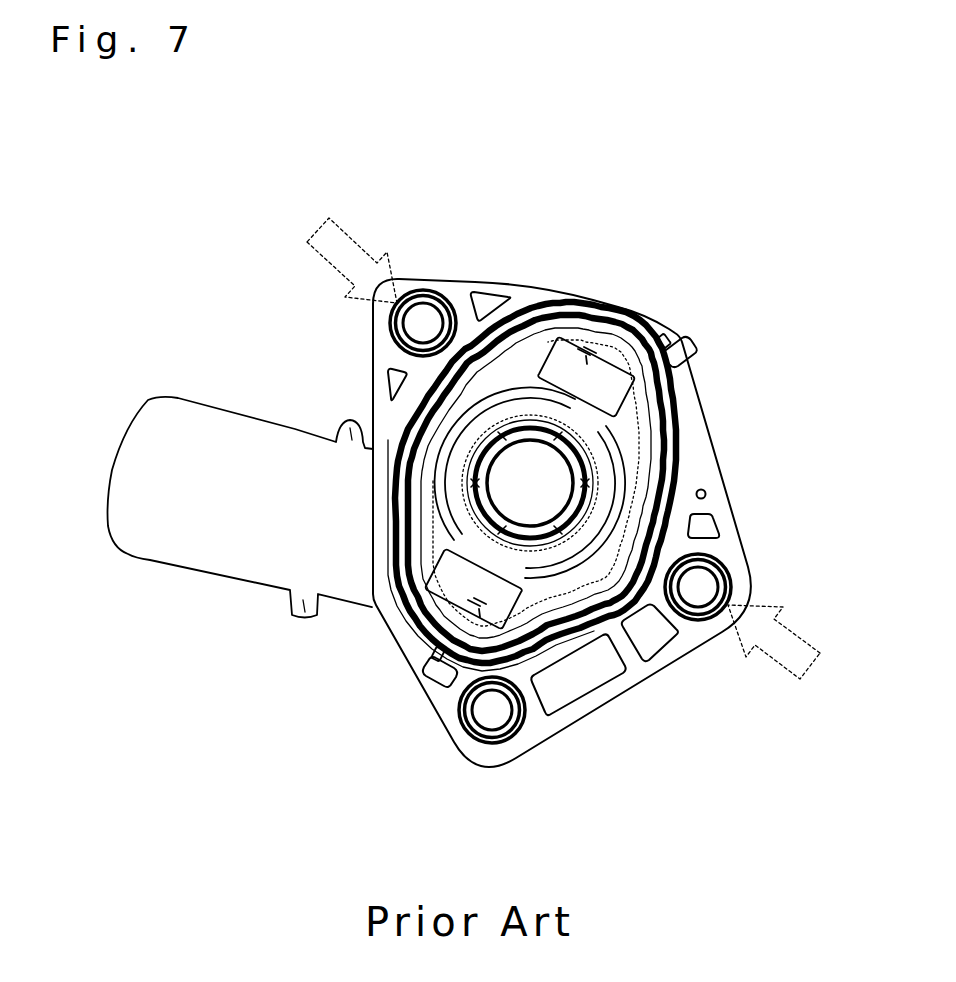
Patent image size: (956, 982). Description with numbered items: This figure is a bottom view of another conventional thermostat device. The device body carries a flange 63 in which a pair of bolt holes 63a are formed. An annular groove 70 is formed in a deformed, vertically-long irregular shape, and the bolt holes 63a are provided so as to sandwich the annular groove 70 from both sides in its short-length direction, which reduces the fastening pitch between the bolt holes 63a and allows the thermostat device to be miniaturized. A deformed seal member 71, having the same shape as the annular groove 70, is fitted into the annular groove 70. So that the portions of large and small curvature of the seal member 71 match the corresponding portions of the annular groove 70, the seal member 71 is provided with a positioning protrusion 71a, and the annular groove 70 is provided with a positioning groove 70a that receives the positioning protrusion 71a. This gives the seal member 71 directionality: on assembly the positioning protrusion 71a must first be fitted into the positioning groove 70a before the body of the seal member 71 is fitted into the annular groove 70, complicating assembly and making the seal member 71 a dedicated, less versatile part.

The flange 63 is at (443, 281).
The bolt hole 63a is at (417, 291).
The annular groove 70 is at (678, 428).
The positioning groove 70a is at (664, 334).
The seal member 71 is at (607, 313).
The positioning protrusion 71a is at (692, 348).